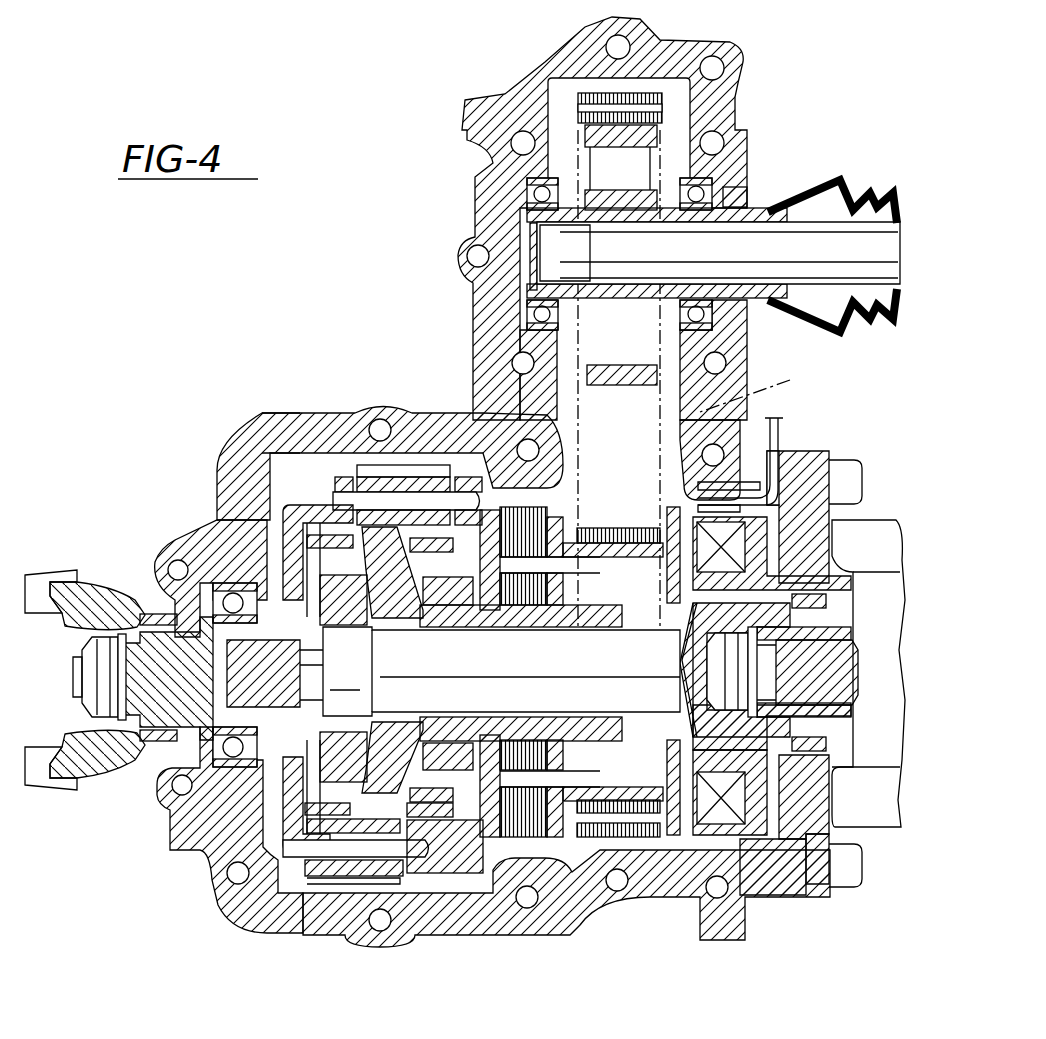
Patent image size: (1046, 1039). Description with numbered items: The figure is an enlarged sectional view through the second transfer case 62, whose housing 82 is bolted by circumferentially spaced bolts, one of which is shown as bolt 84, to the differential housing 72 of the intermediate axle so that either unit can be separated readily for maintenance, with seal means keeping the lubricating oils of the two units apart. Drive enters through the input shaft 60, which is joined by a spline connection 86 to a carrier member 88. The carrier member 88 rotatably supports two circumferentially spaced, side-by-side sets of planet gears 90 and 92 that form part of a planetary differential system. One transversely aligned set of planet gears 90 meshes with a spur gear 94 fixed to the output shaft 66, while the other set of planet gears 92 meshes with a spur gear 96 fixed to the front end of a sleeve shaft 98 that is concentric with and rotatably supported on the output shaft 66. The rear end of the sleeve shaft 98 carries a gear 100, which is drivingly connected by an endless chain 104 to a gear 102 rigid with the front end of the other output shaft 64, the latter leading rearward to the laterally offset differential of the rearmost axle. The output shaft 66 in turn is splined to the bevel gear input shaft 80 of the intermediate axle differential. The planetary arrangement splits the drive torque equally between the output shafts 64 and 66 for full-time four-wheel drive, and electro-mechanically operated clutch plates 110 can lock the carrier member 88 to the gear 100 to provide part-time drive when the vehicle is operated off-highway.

The input shaft 60 is at (130, 670).
The transfer case 62 is at (358, 402).
The output shaft 64 is at (822, 245).
The output shaft 66 is at (468, 700).
The differential housing 72 is at (850, 543).
The bevel gear input shaft 80 is at (837, 667).
The housing 82 is at (263, 417).
The bolt 84 is at (847, 877).
The spline connection 86 is at (295, 620).
The carrier member 88 is at (318, 517).
The planet gears 90 is at (330, 877).
The planet gears 92 is at (412, 470).
The spur gear 94 is at (355, 767).
The spur gear 96 is at (445, 565).
The sleeve shaft 98 is at (608, 760).
The gear 100 is at (617, 543).
The gear 102 is at (633, 372).
The endless chain 104 is at (770, 383).
The clutch plates 110 is at (527, 800).